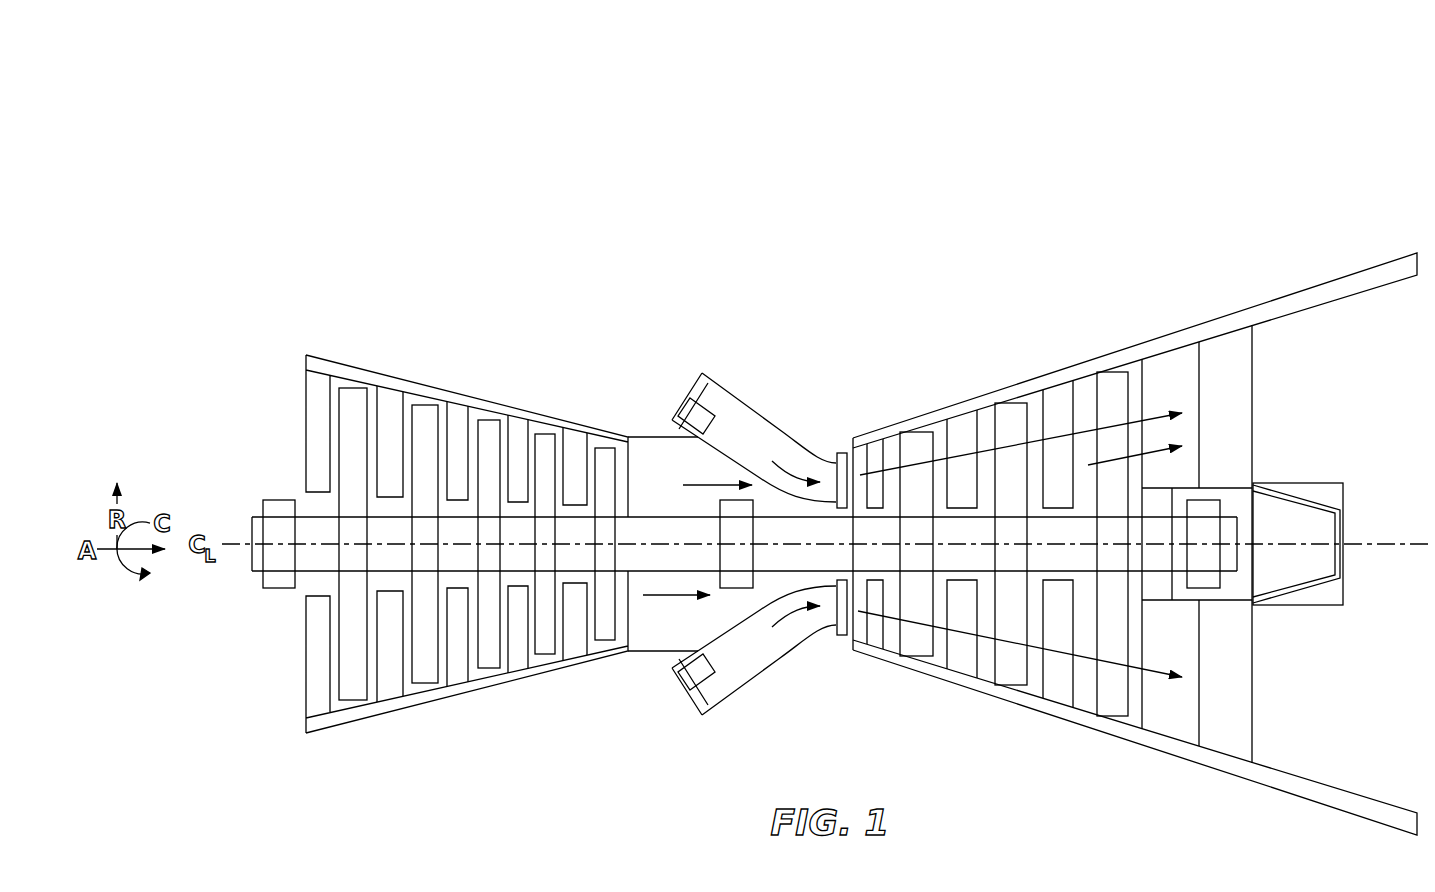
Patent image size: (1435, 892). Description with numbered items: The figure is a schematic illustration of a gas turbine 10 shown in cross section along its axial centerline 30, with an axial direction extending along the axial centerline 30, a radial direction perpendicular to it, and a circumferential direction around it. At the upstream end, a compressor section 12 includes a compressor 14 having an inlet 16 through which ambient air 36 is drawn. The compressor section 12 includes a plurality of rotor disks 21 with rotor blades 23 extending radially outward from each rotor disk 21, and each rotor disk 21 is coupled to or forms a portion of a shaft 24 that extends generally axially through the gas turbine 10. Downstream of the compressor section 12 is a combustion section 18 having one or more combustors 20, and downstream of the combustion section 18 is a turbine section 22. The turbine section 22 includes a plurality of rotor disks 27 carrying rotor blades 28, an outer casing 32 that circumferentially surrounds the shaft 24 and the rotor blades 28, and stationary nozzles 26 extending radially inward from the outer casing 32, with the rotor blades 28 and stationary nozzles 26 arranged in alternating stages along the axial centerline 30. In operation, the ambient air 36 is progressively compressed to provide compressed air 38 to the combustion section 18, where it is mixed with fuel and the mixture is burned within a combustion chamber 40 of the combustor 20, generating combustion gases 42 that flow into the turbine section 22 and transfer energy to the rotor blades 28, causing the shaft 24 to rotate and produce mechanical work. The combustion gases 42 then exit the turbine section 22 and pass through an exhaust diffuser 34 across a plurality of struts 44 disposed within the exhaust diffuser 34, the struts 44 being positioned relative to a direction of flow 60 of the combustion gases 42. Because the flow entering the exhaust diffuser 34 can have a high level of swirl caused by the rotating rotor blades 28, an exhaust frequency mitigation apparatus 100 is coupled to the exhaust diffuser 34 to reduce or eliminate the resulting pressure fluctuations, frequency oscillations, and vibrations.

The gas turbine 10 is at (1086, 164).
The compressor section 12 is at (628, 408).
The compressor 14 is at (364, 707).
The inlet 16 is at (305, 410).
The combustion section 18 is at (853, 408).
The combustor 20 is at (722, 386).
The rotor disk 21 is at (492, 578).
The turbine section 22 is at (853, 408).
The rotor blade 23 is at (488, 652).
The shaft 24 is at (667, 525).
The stationary nozzle 26 is at (958, 430).
The rotor disk 27 is at (907, 578).
The rotor blade 28 is at (1015, 673).
The axial centerline 30 is at (240, 543).
The outer casing 32 is at (1062, 720).
The exhaust diffuser 34 is at (1143, 323).
The ambient air 36 is at (274, 438).
The compressed air 38 is at (730, 484).
The combustion chamber 40 is at (730, 432).
The combustion gases 42 is at (793, 470).
The strut 44 is at (1235, 398).
The direction of flow 60 is at (1153, 454).
The exhaust frequency mitigation apparatus 100 is at (1331, 451).